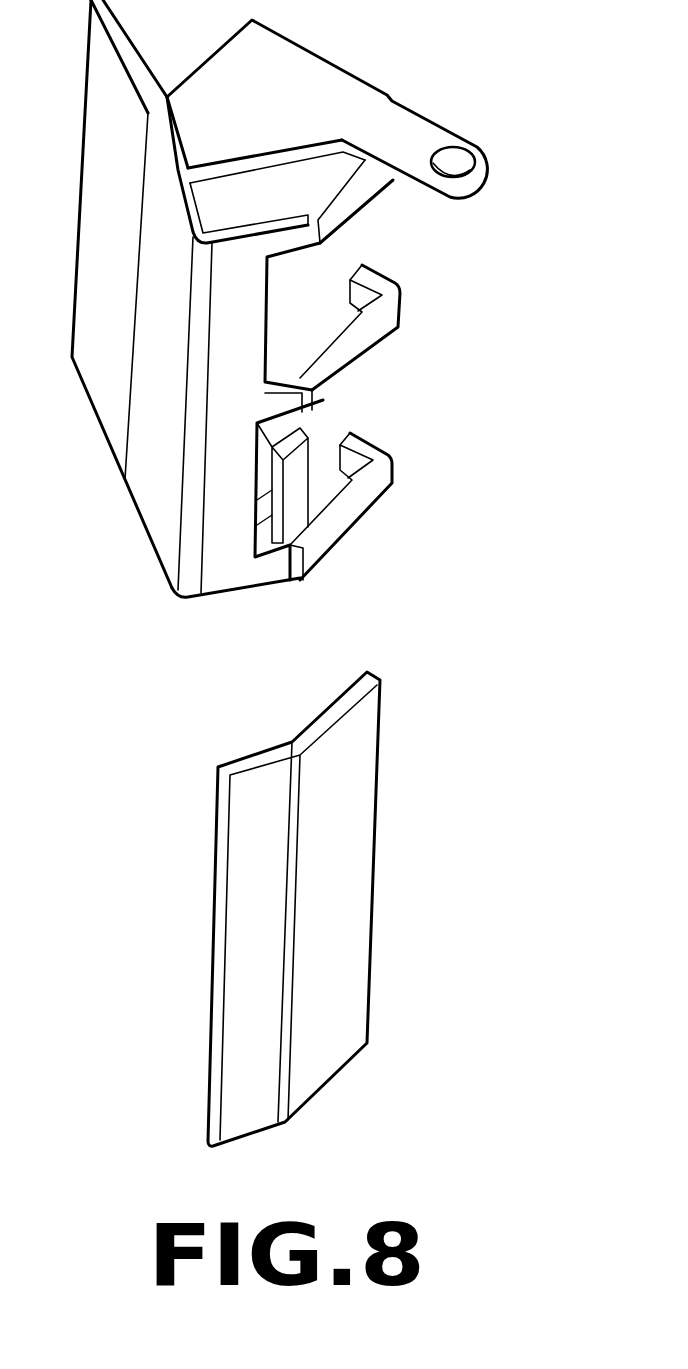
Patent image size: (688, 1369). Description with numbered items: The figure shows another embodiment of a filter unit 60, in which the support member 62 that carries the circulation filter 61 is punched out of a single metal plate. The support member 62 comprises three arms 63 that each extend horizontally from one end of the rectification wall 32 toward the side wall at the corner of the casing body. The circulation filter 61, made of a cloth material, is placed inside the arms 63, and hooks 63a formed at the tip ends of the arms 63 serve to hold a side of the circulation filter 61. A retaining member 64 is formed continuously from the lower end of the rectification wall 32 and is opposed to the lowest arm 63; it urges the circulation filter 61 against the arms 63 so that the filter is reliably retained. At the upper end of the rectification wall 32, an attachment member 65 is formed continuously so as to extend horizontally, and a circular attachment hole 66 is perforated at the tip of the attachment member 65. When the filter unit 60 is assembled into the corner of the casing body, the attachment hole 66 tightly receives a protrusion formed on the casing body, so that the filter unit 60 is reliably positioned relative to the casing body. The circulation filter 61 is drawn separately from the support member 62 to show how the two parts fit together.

The rectification wall 32 is at (132, 244).
The filter unit 60 is at (259, 631).
The circulation filter 61 is at (235, 762).
The support member 62 is at (215, 598).
The arms 63 is at (362, 207).
The hooks 63a is at (350, 292).
The retaining member 64 is at (303, 437).
The attachment member 65 is at (345, 72).
The attachment hole 66 is at (457, 152).